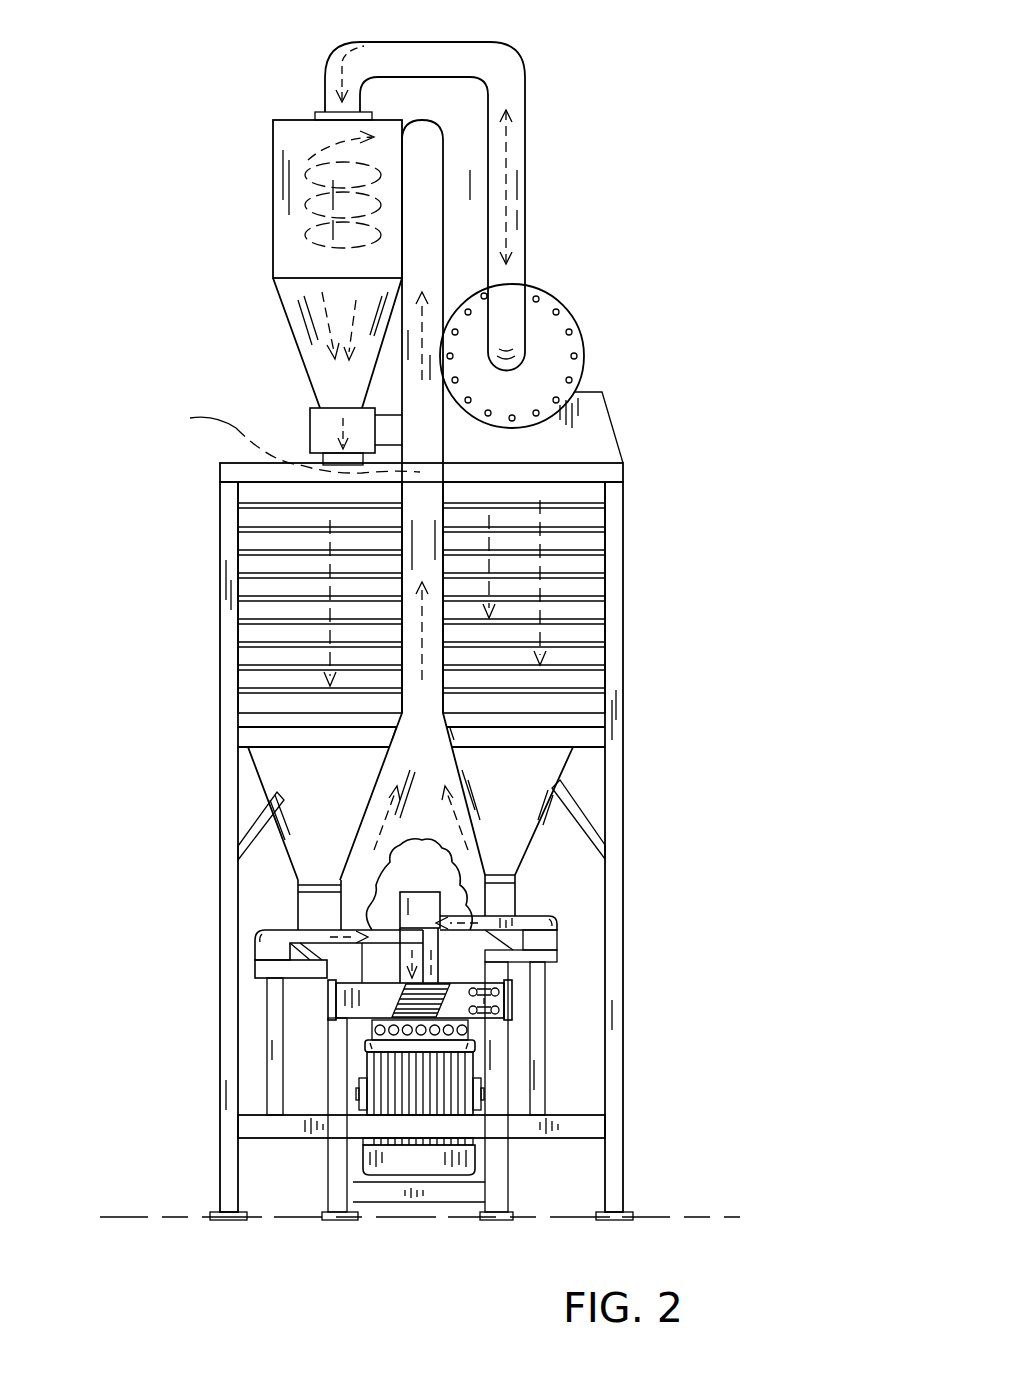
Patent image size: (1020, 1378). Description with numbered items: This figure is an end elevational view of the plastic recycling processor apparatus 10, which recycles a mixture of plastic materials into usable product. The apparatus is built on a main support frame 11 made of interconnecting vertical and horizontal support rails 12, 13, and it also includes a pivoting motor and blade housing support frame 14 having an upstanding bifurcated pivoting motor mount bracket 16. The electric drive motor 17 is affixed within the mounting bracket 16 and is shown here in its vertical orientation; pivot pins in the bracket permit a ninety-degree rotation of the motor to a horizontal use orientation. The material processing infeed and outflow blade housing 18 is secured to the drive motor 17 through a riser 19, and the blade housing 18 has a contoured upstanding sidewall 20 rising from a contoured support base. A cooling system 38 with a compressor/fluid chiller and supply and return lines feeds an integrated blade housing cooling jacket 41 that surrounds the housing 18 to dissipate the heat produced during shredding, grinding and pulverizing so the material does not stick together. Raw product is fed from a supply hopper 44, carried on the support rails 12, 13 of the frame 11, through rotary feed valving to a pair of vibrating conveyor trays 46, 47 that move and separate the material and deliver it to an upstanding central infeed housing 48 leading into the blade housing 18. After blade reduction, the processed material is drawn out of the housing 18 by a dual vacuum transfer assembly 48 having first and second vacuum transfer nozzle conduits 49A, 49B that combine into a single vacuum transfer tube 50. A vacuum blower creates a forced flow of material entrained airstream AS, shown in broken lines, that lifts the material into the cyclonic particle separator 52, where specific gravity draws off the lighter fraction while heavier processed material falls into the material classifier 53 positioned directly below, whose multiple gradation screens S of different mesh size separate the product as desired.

The plastic recycling processor apparatus 10 is at (677, 307).
The main support frame 11 is at (633, 803).
The vertical support rail 12 is at (612, 1100).
The horizontal support rail 13 is at (595, 735).
The pivoting motor and blade housing support frame 14 is at (363, 1157).
The pivoting motor mount bracket 16 is at (477, 1095).
The electric drive motor 17 is at (380, 1070).
The material processing infeed and outflow blade housing 18 is at (323, 992).
The riser 19 is at (375, 1030).
The contoured upstanding sidewall 20 is at (363, 1002).
The cooling system 38 is at (515, 1002).
The integrated blade housing cooling jacket 41 is at (437, 992).
The supply hopper 44 is at (262, 764).
The vibrating conveyor tray 46 is at (312, 932).
The vibrating conveyor tray 47 is at (520, 916).
The upstanding central infeed housing 48 is at (465, 782).
The first vacuum transfer nozzle conduit 49A is at (353, 903).
The second vacuum transfer nozzle conduit 49B is at (452, 870).
The vacuum transfer tube 50 is at (430, 495).
The cyclonic particle separator 52 is at (285, 192).
The material classifier 53 is at (625, 532).
The gradation screens S is at (250, 565).
The material entrained airstream AS is at (286, 439).